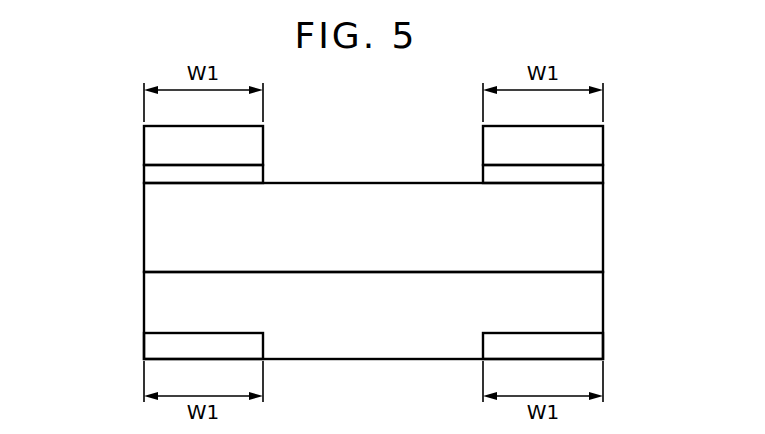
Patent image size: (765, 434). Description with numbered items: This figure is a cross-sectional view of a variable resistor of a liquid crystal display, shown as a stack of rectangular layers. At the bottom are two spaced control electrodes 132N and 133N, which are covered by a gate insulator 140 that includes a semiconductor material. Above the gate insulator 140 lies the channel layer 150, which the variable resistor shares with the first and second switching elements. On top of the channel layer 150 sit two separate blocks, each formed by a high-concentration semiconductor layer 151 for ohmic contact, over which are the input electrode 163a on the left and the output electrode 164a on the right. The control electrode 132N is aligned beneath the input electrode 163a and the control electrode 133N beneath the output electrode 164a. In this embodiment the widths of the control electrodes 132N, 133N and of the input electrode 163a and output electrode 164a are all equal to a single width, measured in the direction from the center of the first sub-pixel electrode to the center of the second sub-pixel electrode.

The channel layer 150 is at (163, 229).
The gate insulator 140 is at (163, 308).
The high-concentration semiconductor layer 151 is at (163, 176).
The input electrode 163a is at (163, 146).
The output electrode 164a is at (585, 147).
The control electrode 132N is at (163, 349).
The control electrode 133N is at (585, 349).